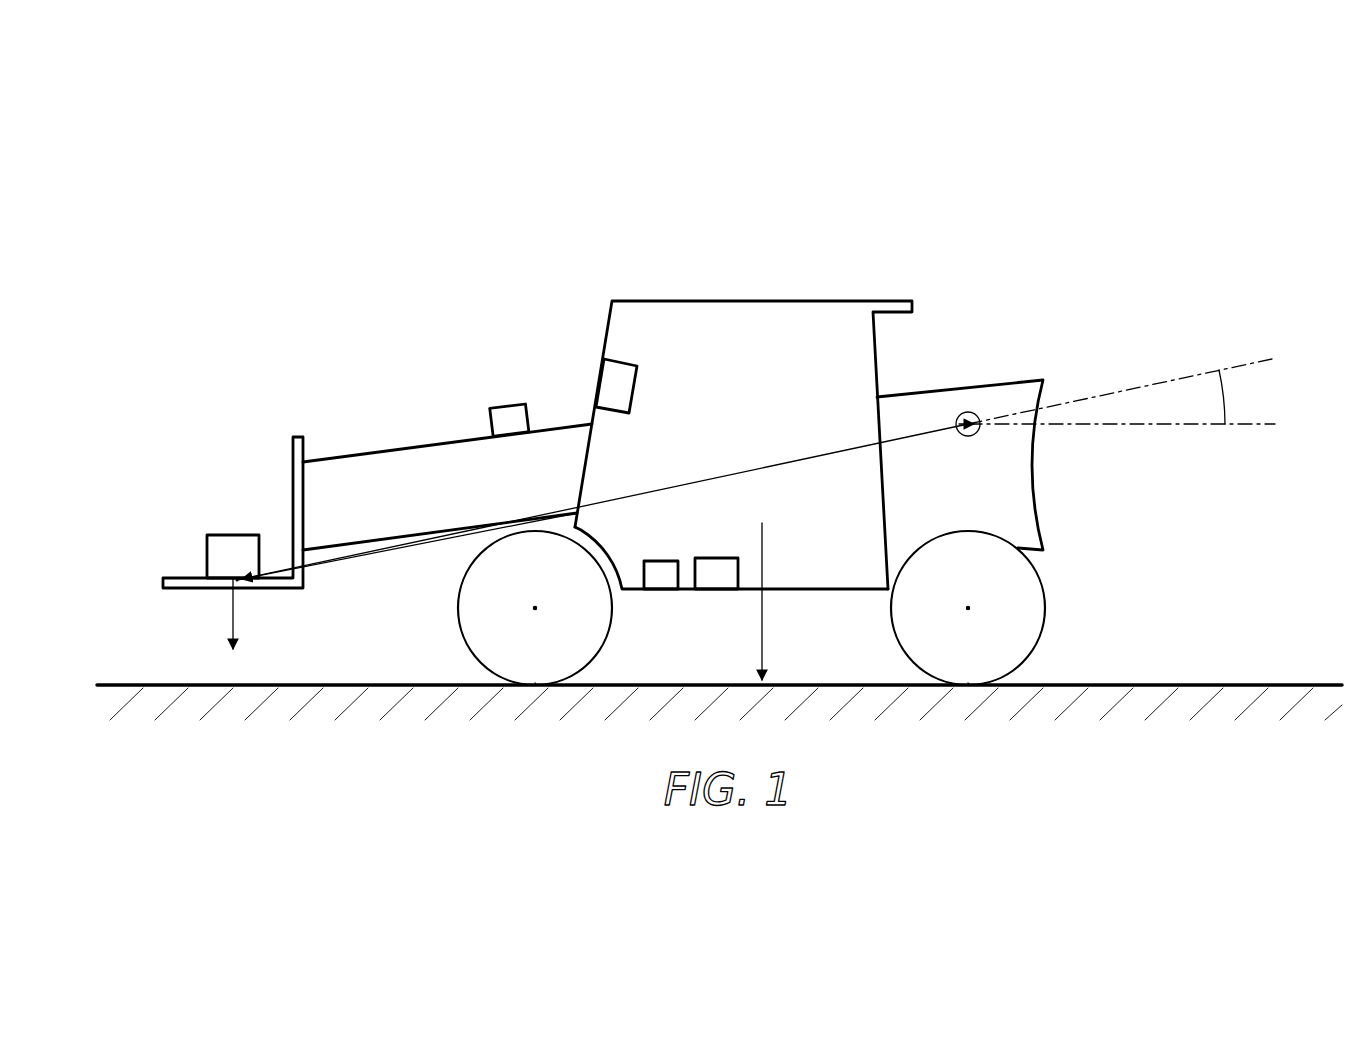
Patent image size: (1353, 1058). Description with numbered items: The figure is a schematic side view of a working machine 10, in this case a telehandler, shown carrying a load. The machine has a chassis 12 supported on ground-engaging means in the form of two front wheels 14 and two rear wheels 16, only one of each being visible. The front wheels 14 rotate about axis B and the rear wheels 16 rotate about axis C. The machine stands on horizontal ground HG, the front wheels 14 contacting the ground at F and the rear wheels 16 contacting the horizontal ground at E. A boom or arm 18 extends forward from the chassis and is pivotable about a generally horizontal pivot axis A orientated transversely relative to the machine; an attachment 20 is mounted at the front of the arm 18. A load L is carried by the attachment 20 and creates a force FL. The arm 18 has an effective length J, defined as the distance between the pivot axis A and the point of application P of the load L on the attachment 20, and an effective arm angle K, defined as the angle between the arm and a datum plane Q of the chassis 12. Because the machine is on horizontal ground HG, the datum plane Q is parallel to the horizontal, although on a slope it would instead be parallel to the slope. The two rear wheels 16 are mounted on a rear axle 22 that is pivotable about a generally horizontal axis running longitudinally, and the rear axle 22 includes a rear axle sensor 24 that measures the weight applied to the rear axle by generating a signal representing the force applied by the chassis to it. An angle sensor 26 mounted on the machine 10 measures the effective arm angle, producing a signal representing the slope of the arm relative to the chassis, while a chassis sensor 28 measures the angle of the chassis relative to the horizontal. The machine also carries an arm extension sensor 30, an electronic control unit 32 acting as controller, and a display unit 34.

The working machine 10 is at (867, 255).
The chassis 12 is at (810, 583).
The front wheels 14 is at (471, 641).
The rear wheels 16 is at (1026, 640).
The arm 18 is at (410, 447).
The attachment 20 is at (292, 450).
The rear axle 22 is at (972, 604).
The rear axle sensor 24 is at (962, 609).
The angle sensor 26 is at (968, 437).
The chassis sensor 28 is at (660, 584).
The arm extension sensor 30 is at (513, 405).
The electronic control unit 32 is at (715, 583).
The display unit 34 is at (639, 392).
The pivot axis A is at (968, 411).
The front wheel axis B is at (533, 608).
The rear wheel axis C is at (968, 608).
The rear wheel ground contact point E is at (969, 692).
The front wheel ground contact point F is at (536, 692).
The effective length J is at (835, 455).
The effective arm angle K is at (1227, 392).
The load L is at (233, 533).
The point of application P is at (242, 589).
The datum plane Q is at (1268, 430).
The load force FL is at (231, 628).
The horizontal ground HG is at (1229, 683).